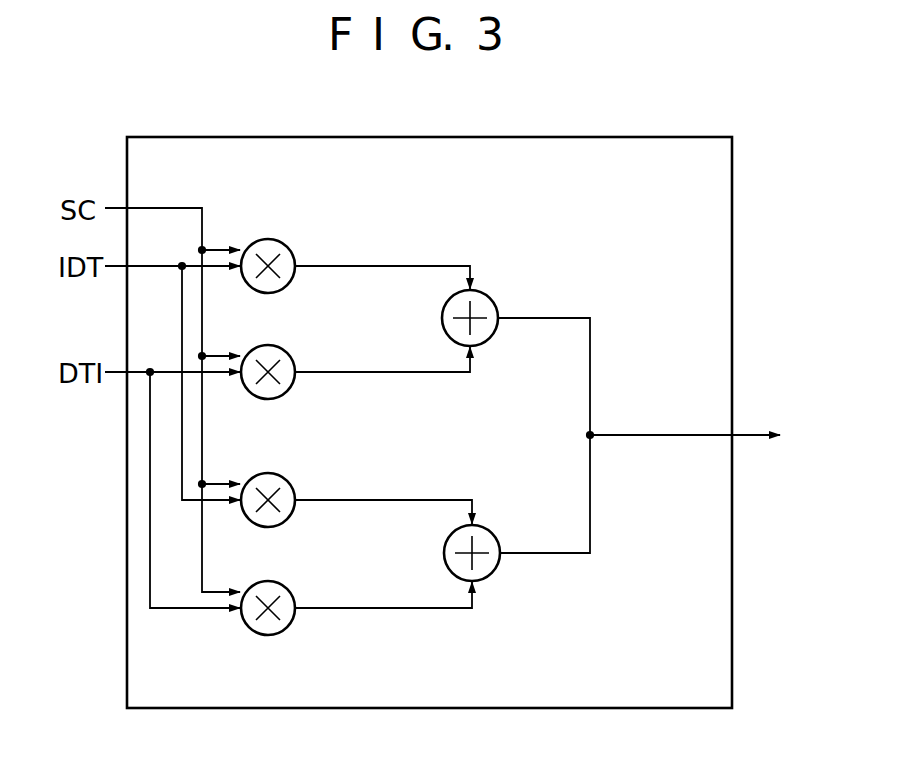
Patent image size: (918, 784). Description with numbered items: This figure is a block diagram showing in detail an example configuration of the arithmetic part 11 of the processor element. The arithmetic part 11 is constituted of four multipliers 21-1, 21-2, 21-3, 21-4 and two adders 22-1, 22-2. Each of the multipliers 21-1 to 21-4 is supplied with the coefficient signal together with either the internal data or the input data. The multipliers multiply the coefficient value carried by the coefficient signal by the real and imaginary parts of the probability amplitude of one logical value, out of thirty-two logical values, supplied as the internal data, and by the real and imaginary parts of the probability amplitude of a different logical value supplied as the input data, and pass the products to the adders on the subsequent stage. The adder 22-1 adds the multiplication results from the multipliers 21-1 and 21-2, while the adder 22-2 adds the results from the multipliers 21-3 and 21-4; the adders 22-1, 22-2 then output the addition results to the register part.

The arithmetic part 11 is at (430, 137).
The multiplier 21-1 is at (273, 238).
The multiplier 21-2 is at (273, 344).
The multiplier 21-3 is at (273, 472).
The multiplier 21-4 is at (273, 580).
The adder 22-1 is at (489, 298).
The adder 22-2 is at (493, 535).